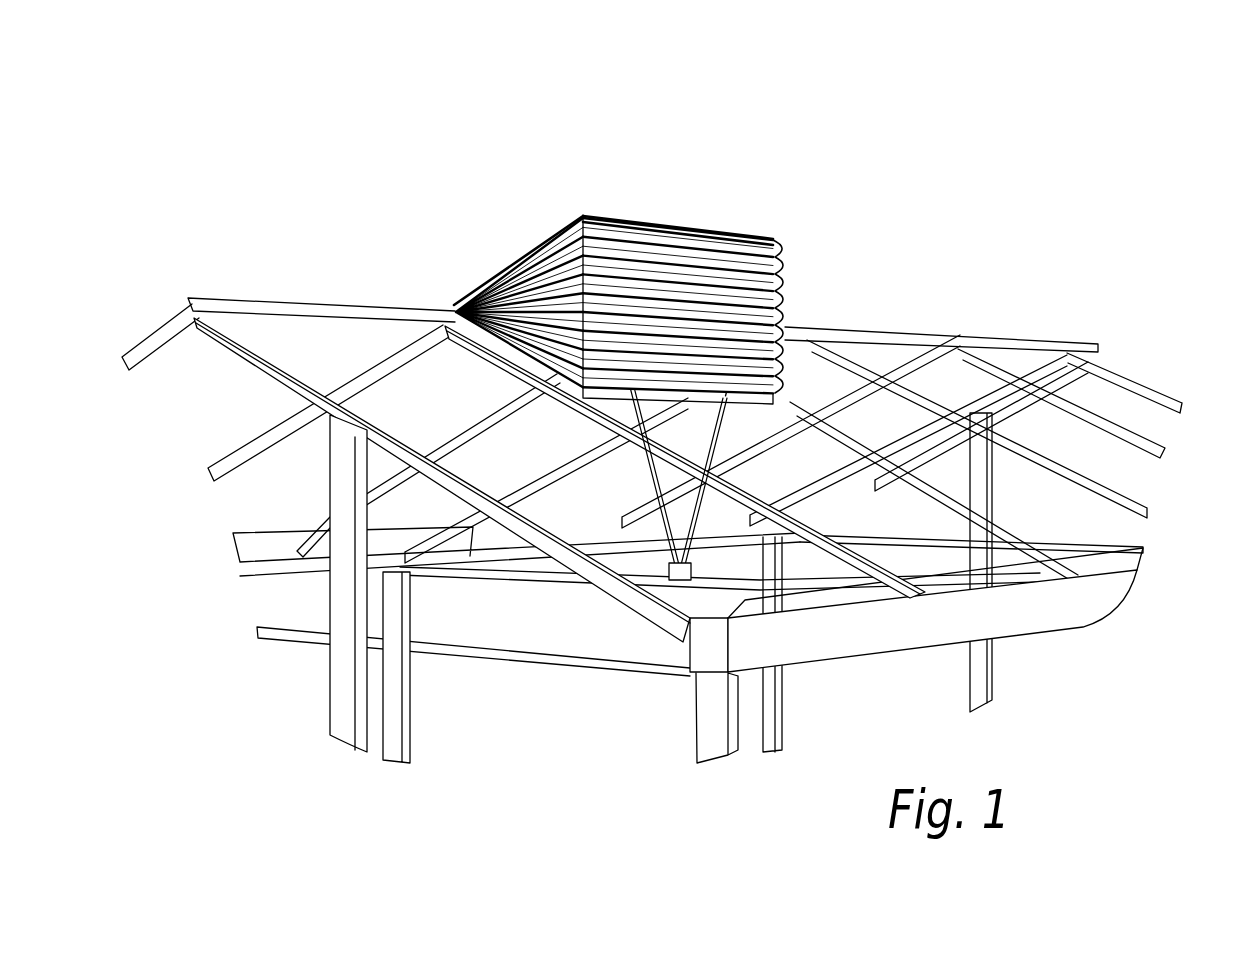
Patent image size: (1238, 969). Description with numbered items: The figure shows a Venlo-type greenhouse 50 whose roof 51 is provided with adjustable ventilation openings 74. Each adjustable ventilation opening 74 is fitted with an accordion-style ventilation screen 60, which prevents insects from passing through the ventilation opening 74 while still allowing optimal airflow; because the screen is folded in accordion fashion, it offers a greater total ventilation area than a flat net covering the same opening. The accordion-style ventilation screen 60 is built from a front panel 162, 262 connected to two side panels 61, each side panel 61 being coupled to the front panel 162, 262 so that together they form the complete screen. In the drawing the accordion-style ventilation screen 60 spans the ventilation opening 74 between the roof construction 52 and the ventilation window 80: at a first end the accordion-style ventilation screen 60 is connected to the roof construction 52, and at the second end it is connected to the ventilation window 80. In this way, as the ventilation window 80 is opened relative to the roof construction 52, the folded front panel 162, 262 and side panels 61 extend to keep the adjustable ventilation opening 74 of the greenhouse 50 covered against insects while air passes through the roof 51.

The greenhouse 50 is at (652, 410).
The roof 51 is at (1043, 447).
The roof construction 52 is at (513, 343).
The accordion-style ventilation screen 60 is at (702, 241).
The side panel 61 is at (548, 313).
The adjustable ventilation opening 74 is at (802, 303).
The ventilation window 80 is at (640, 222).
The front panel 162 is at (766, 302).
The front panel 262 is at (687, 290).